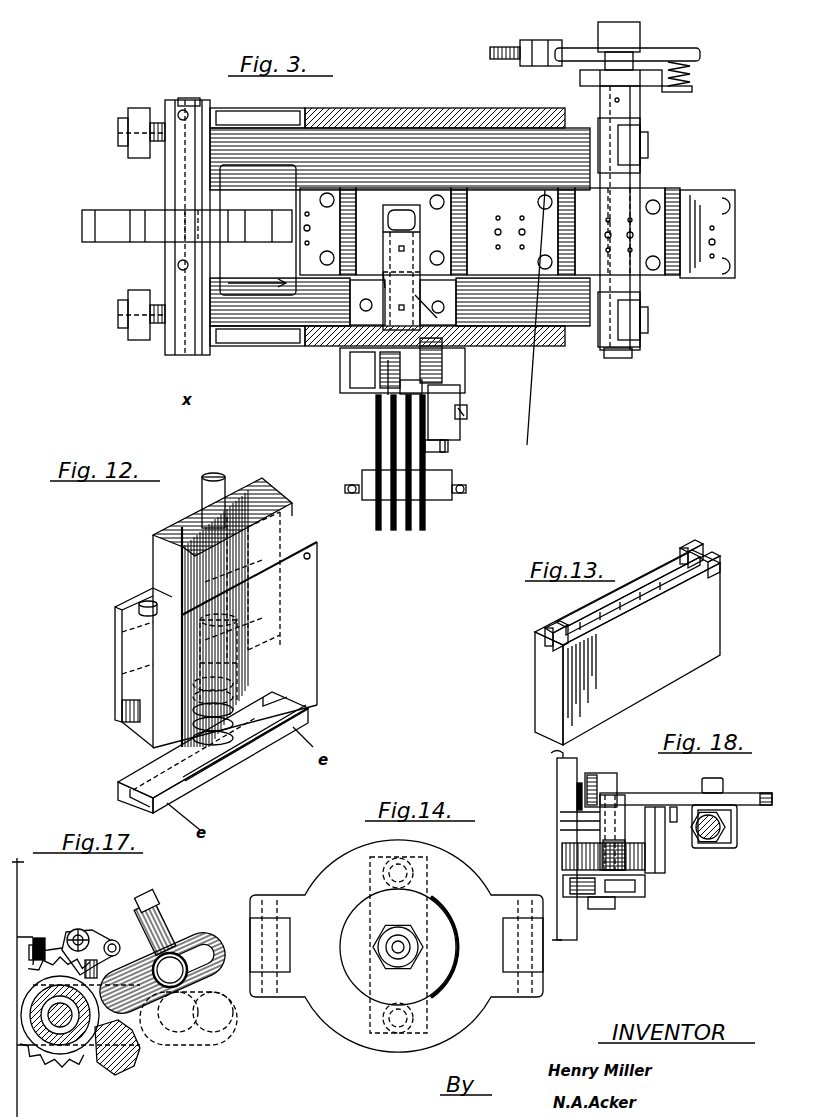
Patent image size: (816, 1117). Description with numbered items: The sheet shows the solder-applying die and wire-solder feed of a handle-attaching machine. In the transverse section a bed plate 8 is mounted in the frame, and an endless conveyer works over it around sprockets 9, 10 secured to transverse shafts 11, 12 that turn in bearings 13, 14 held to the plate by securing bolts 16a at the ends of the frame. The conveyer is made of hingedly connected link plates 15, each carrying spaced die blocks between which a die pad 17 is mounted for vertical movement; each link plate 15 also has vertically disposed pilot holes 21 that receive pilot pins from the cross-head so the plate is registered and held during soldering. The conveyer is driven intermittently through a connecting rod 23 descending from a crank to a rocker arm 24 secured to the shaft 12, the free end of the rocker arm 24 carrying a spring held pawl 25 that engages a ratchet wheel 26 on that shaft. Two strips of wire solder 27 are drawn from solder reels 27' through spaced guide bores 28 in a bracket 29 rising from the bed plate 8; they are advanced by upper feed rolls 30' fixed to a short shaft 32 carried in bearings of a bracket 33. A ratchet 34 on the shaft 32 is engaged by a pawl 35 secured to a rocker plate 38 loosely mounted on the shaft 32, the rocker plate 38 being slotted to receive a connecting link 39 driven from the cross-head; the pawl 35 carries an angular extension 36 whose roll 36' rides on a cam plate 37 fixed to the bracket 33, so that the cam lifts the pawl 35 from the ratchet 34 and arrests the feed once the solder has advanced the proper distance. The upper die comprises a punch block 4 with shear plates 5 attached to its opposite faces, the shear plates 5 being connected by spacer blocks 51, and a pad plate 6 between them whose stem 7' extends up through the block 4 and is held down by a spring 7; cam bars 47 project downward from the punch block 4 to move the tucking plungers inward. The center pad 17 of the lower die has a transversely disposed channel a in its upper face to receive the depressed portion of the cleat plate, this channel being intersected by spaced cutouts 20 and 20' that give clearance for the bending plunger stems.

In FIG. 12, the punch block 4 is at (133, 663).
In FIG. 14, the punch block 4 is at (332, 887).
In FIG. 12, the shear plates 5 is at (115, 663).
In FIG. 12, the pad plate 6 is at (187, 767).
In FIG. 12, the spring 7 is at (242, 736).
In FIG. 12, the stem 7' is at (182, 500).
In FIG. 14, the stem 7' is at (372, 888).
In FIG. 3, the bed plate 8 is at (388, 152).
In FIG. 3, the sprocket 9 is at (115, 218).
In FIG. 3, the sprocket 10 is at (700, 230).
In FIG. 3, the transverse shaft 11 is at (178, 102).
In FIG. 3, the transverse shaft 12 is at (645, 106).
In FIG. 3, the bearing 13 is at (185, 155).
In FIG. 3, the bearing 14 is at (645, 163).
In FIG. 3, the link plates 15 is at (478, 212).
In FIG. 3, the securing bolts 16a is at (120, 133).
In FIG. 3, the die pad 17 is at (403, 267).
In FIG. 13, the die pad 17 is at (627, 647).
In FIG. 13, the cutout 20 is at (612, 601).
In FIG. 13, the cutout 20' is at (666, 547).
In FIG. 3, the pilot holes 21 is at (529, 329).
In FIG. 3, the connecting rod 23 is at (508, 50).
In FIG. 3, the rocker arm 24 is at (695, 52).
In FIG. 3, the spring held pawl 25 is at (680, 84).
In FIG. 3, the ratchet wheel 26 is at (684, 90).
In FIG. 3, the wire solder strips 27 is at (428, 383).
In FIG. 3, the solder reels 27' is at (432, 463).
In FIG. 3, the guide bores 28 is at (385, 288).
In FIG. 3, the bracket 29 is at (437, 318).
In FIG. 3, the upper feed rolls 30' is at (367, 377).
In FIG. 18, the upper feed rolls 30' is at (604, 916).
In FIG. 17, the upper feed rolls 30' is at (60, 1045).
In FIG. 18, the shaft 32 is at (600, 777).
In FIG. 17, the shaft 32 is at (82, 1045).
In FIG. 3, the bracket 33 is at (430, 445).
In FIG. 18, the bracket 33 is at (565, 783).
In FIG. 17, the bracket 33 is at (28, 952).
In FIG. 18, the ratchet 34 is at (583, 877).
In FIG. 17, the ratchet 34 is at (47, 970).
In FIG. 3, the pawl 35 is at (405, 392).
In FIG. 17, the pawl 35 is at (88, 937).
In FIG. 18, the angular extension 36 is at (662, 882).
In FIG. 18, the roll 36' is at (690, 882).
In FIG. 17, the roll 36' is at (127, 916).
In FIG. 18, the cam plate 37 is at (708, 833).
In FIG. 17, the cam plate 37 is at (123, 1067).
In FIG. 3, the rocker plate 38 is at (445, 440).
In FIG. 18, the rocker plate 38 is at (758, 805).
In FIG. 17, the rocker plate 38 is at (192, 937).
In FIG. 3, the connecting link 39 is at (462, 428).
In FIG. 18, the connecting link 39 is at (713, 832).
In FIG. 17, the connecting link 39 is at (150, 923).
In FIG. 14, the cam bars 47 is at (282, 942).
In FIG. 12, the spacer blocks 51 is at (146, 600).
In FIG. 13, the transversely disposed channel a is at (706, 556).